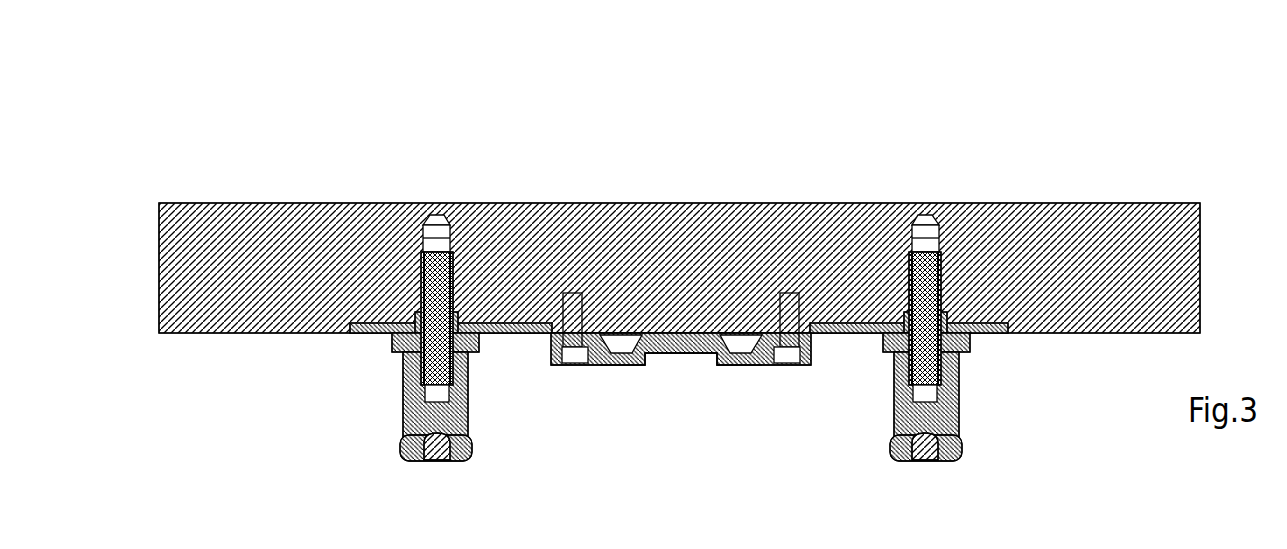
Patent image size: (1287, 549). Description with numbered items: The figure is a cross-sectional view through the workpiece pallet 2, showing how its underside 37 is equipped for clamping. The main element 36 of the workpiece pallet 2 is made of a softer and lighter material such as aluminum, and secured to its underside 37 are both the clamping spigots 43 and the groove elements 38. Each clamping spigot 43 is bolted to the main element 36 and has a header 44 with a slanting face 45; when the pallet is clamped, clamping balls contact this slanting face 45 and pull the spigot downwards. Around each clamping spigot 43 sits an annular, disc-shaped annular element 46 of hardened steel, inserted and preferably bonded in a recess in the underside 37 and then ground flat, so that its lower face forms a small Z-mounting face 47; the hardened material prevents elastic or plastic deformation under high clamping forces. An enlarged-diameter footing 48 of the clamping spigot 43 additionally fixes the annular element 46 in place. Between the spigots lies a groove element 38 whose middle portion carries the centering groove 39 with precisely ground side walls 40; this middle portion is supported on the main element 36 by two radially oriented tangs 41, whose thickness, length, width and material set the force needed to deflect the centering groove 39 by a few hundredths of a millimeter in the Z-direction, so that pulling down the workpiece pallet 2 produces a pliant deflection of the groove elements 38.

The workpiece pallet 2 is at (359, 170).
The main element 36 is at (1143, 218).
The underside 37 is at (210, 343).
The groove element 38 is at (600, 367).
The centering groove 39 is at (680, 368).
The side wall 40 is at (646, 368).
The tang 41 is at (613, 367).
The clamping spigot 43 is at (383, 414).
The header 44 is at (400, 447).
The slanting face 45 is at (473, 437).
The annular element 46 is at (360, 335).
The Z-mounting face 47 is at (502, 339).
The footing 48 is at (391, 349).